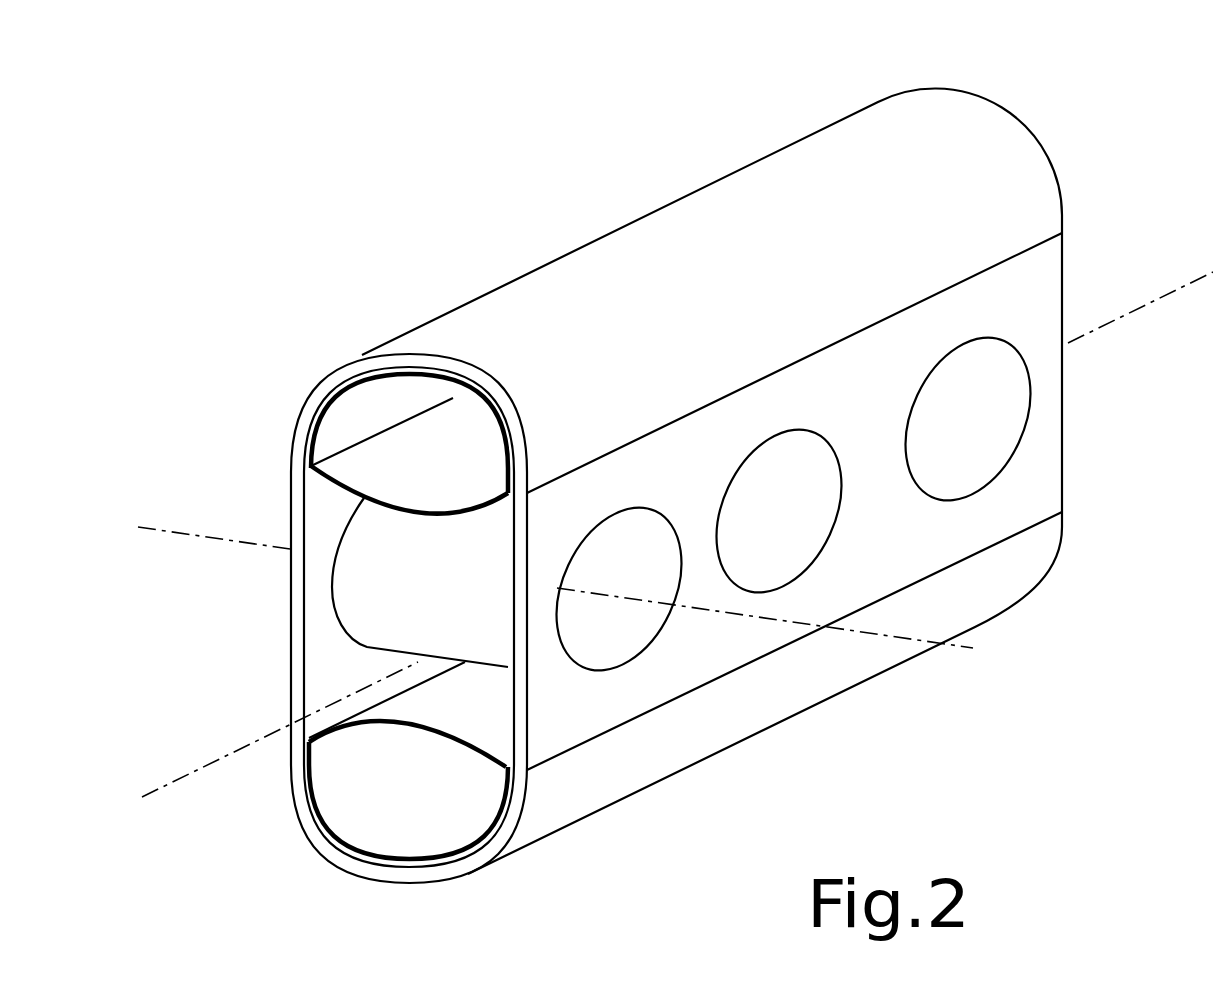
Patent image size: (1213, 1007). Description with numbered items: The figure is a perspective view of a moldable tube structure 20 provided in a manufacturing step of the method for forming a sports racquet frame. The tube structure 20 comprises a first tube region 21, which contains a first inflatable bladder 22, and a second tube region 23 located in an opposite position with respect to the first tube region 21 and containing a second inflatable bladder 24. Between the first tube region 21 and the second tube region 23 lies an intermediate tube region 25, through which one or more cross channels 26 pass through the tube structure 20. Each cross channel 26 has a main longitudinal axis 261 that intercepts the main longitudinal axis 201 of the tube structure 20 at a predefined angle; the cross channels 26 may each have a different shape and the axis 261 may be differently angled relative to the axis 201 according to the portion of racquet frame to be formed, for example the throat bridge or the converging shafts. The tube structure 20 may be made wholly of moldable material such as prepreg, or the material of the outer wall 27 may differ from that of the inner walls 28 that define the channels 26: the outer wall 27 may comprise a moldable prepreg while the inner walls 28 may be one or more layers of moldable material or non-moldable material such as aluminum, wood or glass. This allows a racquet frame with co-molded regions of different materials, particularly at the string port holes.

The tube structure 20 is at (1110, 95).
The first tube region 21 is at (357, 427).
The first inflatable bladder 22 is at (353, 380).
The second tube region 23 is at (445, 832).
The second inflatable bladder 24 is at (335, 825).
The intermediate tube region 25 is at (318, 642).
The cross channels 26 is at (600, 637).
The main longitudinal axis of the cross channels 261 is at (566, 611).
The outer wall 27 is at (502, 830).
The inner walls 28 is at (375, 593).
The main longitudinal axis of the tube structure 201 is at (663, 560).